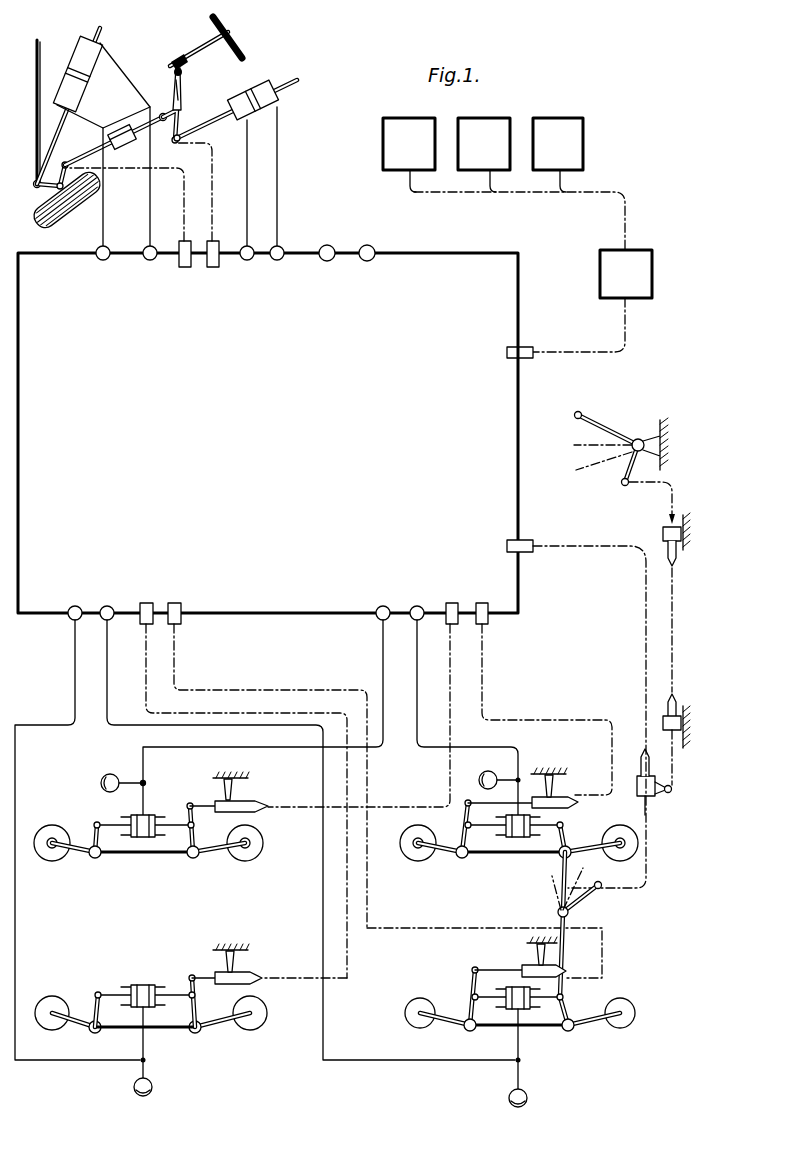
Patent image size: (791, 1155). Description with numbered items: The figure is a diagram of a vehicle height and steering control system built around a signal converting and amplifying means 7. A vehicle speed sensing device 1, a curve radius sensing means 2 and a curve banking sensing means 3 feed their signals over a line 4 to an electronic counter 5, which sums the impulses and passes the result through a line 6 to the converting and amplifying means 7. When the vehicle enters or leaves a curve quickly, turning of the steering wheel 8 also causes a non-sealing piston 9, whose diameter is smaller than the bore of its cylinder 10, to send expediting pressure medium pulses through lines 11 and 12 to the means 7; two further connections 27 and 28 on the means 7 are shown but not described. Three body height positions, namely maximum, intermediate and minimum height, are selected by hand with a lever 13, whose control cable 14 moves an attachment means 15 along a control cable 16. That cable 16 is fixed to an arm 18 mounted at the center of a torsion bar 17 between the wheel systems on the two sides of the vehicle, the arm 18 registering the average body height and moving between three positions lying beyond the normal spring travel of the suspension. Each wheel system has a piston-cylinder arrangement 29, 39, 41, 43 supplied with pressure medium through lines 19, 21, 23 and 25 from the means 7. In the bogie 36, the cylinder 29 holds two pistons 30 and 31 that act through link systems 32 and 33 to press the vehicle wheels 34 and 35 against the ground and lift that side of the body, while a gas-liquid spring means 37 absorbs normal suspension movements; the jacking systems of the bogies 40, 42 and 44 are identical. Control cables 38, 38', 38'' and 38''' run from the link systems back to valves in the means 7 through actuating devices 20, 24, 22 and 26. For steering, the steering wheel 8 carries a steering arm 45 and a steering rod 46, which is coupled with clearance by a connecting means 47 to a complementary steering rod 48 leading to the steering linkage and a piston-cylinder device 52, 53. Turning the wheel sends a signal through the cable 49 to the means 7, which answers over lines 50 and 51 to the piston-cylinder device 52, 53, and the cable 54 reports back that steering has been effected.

The vehicle speed sensing device 1 is at (408, 128).
The curve radius sensing means 2 is at (485, 128).
The curve banking sensing means 3 is at (558, 128).
The line 4 is at (625, 207).
The electronic counter 5 is at (650, 254).
The line 6 is at (625, 340).
The signal converting and amplifying means 7 is at (523, 262).
The steering wheel 8 is at (242, 56).
The non-sealing piston 9 is at (265, 105).
The cylinder 10 is at (288, 84).
The line 11 is at (250, 246).
The line 12 is at (281, 246).
The lever 13 is at (600, 428).
The control cable 14 is at (664, 512).
The attachment means 15 is at (658, 800).
The control cable 16 is at (576, 546).
The torsion bar 17 is at (568, 945).
The arm 18 is at (592, 897).
The line 19 is at (70, 620).
The actuating device 20 is at (142, 626).
The line 21 is at (104, 620).
The actuating device 22 is at (172, 626).
The line 23 is at (379, 620).
The actuating device 24 is at (449, 626).
The line 25 is at (414, 620).
The actuating device 26 is at (479, 626).
The pressure connection 27 is at (331, 245).
The pressure connection 28 is at (371, 245).
The cylinder 29 is at (145, 984).
The piston 30 is at (130, 986).
The piston 31 is at (156, 988).
The link system 32 is at (86, 1010).
The link system 33 is at (212, 1028).
The vehicle wheel 34 is at (46, 996).
The vehicle wheel 35 is at (255, 1028).
The bogie 36 is at (166, 1030).
The gas-liquid spring means 37 is at (152, 1086).
The control cable 38 is at (304, 965).
The control cable 38' is at (359, 715).
The control cable 38'' is at (484, 934).
The control cable 38''' is at (547, 709).
The piston-cylinder arrangement 39 is at (128, 842).
The bogie 40 is at (152, 852).
The piston-cylinder arrangement 41 is at (540, 1013).
The bogie 42 is at (555, 1020).
The piston-cylinder arrangement 43 is at (492, 848).
The bogie 44 is at (512, 856).
The steering arm 45 is at (183, 92).
The steering rod 46 is at (148, 118).
The connecting means 47 is at (122, 128).
The complementary steering rod 48 is at (100, 148).
The cable 49 is at (214, 241).
The line 50 is at (103, 246).
The line 51 is at (150, 246).
The piston-cylinder device 52 is at (100, 28).
The piston-cylinder device 53 is at (100, 46).
The cable 54 is at (186, 241).